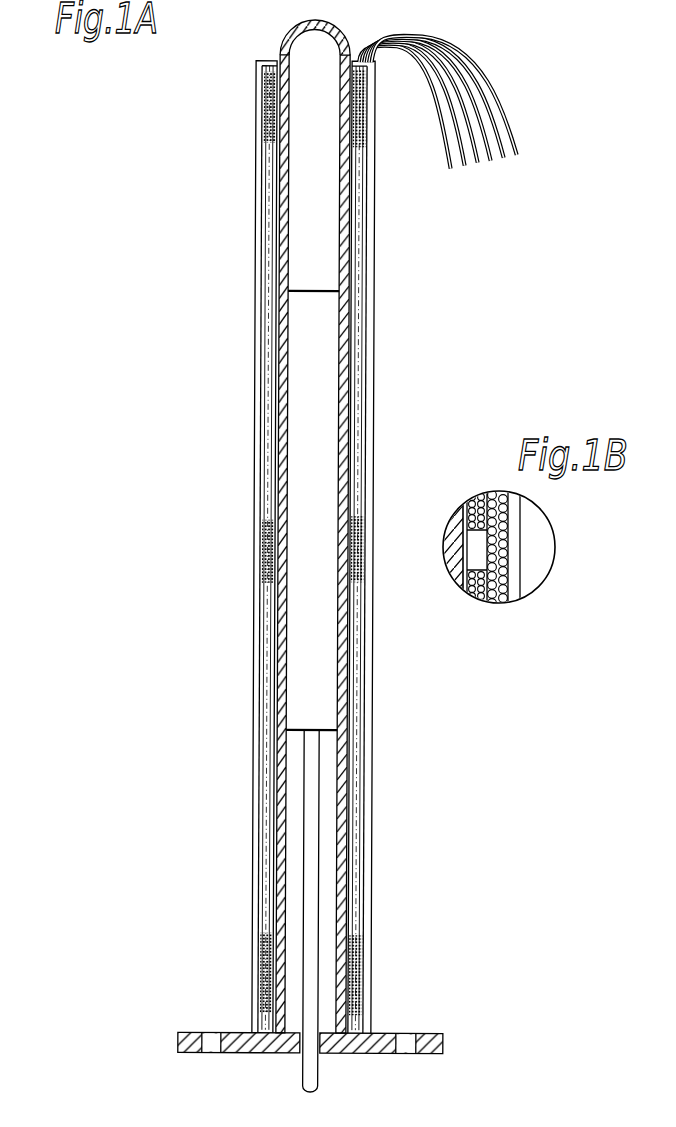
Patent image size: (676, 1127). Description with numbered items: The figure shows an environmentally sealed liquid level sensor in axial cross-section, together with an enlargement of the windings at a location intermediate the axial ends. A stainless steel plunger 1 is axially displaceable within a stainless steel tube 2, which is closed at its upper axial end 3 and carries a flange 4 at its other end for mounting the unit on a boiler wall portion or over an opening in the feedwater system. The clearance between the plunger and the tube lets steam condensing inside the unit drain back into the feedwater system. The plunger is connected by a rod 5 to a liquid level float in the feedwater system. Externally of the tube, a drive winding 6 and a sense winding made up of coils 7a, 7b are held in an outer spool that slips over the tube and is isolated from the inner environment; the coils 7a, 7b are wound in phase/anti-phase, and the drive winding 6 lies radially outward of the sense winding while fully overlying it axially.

In FIG. 1A, the plunger 1 is at (294, 681).
In FIG. 1A, the tube 2 is at (277, 778).
In FIG. 1A, the upper axial end 3 is at (295, 32).
In FIG. 1A, the flange 4 is at (376, 1032).
In FIG. 1A, the rod 5 is at (318, 1077).
In FIG. 1A, the drive winding 6 is at (353, 938).
In FIG. 1A, the sense winding coil 7a is at (262, 77).
In FIG. 1B, the sense winding coil 7a is at (481, 499).
In FIG. 1A, the sense winding coil 7b is at (352, 937).